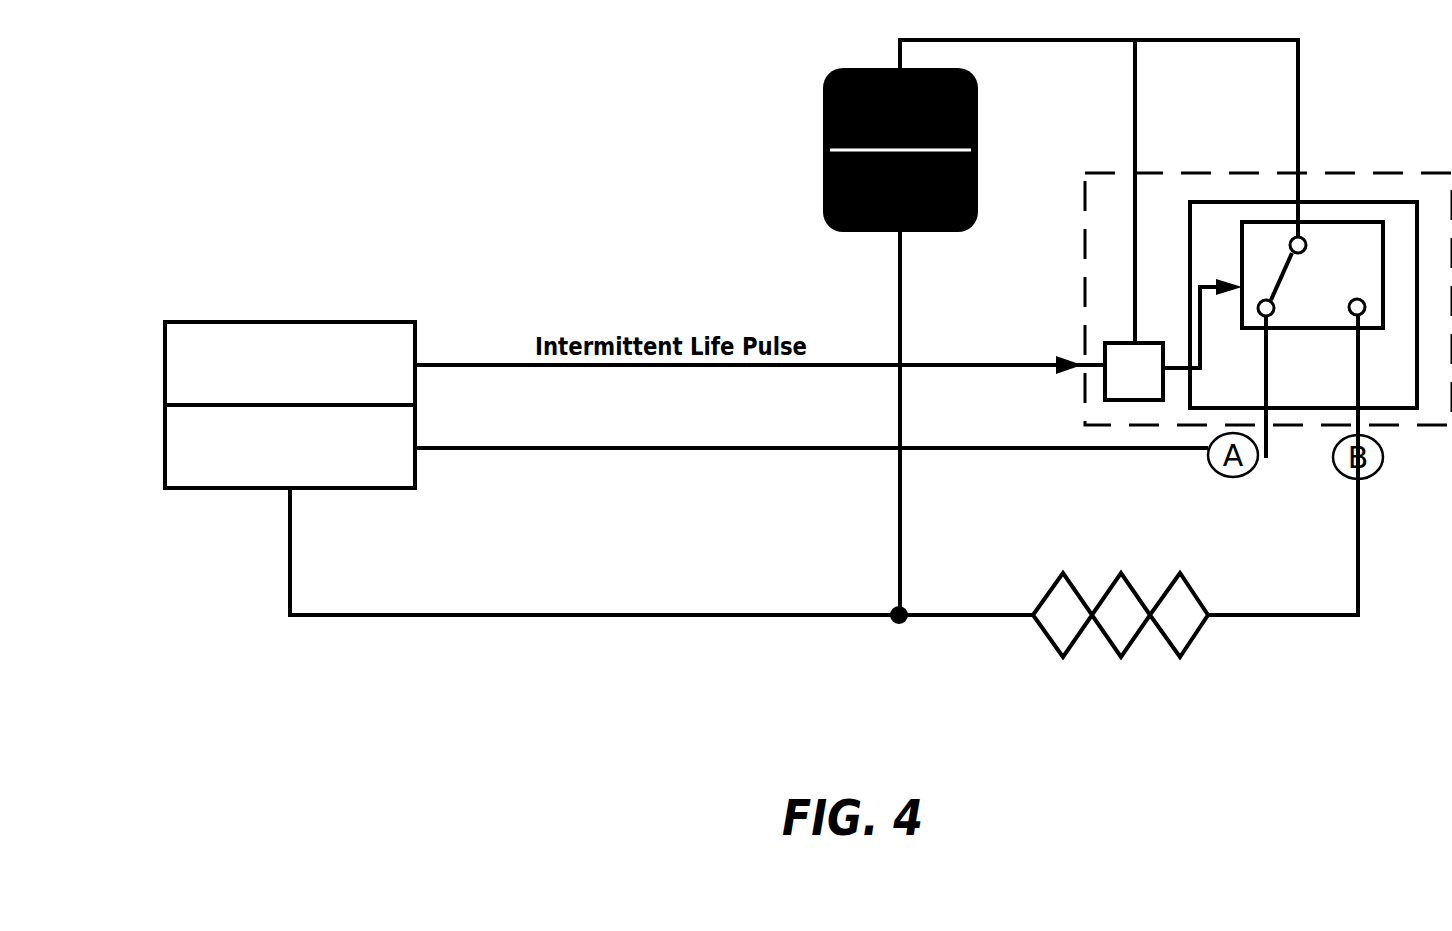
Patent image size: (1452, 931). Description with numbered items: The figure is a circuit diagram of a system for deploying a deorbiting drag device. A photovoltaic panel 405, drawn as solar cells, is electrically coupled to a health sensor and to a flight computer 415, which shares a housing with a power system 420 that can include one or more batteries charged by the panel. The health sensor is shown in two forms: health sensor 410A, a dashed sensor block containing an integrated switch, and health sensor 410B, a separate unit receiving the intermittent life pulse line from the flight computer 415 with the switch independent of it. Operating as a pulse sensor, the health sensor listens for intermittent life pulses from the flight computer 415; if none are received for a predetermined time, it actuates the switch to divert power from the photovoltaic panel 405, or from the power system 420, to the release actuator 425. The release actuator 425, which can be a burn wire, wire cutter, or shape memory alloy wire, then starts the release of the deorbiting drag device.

The photovoltaic panel 405 is at (822, 93).
The health sensor 410A is at (1084, 293).
The health sensor 410B is at (1105, 343).
The flight computer 415 is at (225, 320).
The power system 420 is at (165, 445).
The release actuator 425 is at (1065, 572).